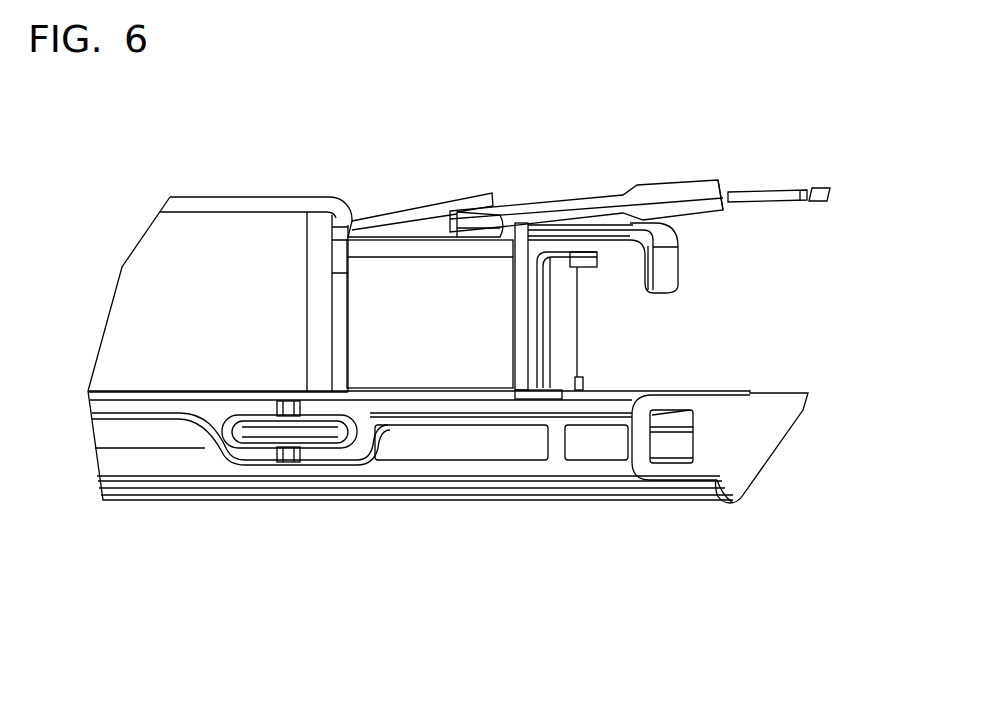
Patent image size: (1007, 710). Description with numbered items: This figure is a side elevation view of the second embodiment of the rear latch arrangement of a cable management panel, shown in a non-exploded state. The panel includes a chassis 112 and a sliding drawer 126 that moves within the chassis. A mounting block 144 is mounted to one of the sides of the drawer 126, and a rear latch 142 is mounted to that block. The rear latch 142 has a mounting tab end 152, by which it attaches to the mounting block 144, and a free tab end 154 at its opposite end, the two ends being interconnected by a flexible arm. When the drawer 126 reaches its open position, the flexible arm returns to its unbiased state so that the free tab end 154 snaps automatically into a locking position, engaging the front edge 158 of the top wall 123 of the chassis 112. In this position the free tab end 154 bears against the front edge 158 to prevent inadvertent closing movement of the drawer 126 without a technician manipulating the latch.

The chassis 112 is at (782, 188).
The top wall 123 is at (747, 188).
The sliding drawer 126 is at (502, 512).
The rear latch 142 is at (568, 190).
The mounting block 144 is at (480, 338).
The mounting tab end 152 is at (425, 197).
The free tab end 154 is at (678, 183).
The front edge 158 is at (723, 198).